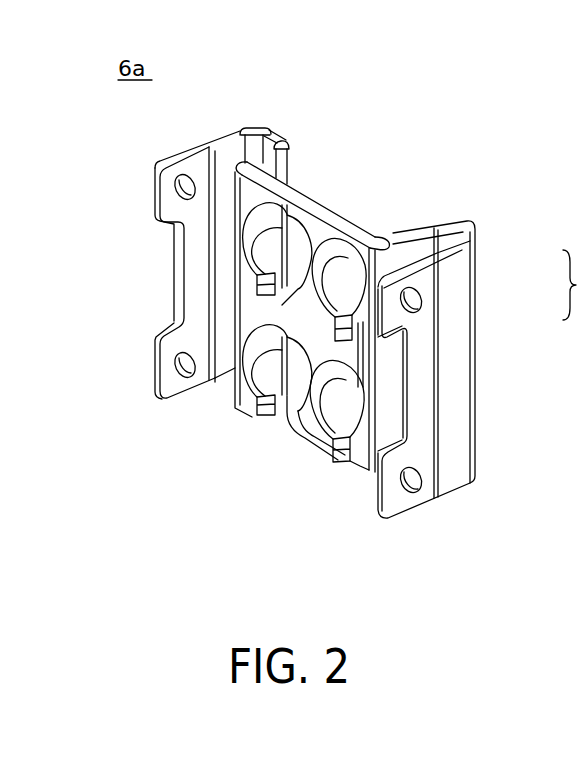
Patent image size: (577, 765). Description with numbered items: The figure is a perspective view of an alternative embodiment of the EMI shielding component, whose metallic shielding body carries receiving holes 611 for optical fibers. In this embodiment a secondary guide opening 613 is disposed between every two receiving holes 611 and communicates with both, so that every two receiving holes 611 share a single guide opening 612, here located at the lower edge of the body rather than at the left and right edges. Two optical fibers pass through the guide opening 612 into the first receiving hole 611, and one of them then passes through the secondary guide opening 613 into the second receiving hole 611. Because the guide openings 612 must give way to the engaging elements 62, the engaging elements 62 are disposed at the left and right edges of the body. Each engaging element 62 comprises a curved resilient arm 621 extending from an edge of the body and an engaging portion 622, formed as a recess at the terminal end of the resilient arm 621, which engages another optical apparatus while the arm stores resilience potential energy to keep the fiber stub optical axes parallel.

The engaging element 62 is at (197, 227).
The receiving hole 611 is at (352, 298).
The guide opening 612 is at (338, 462).
The secondary guide opening 613 is at (338, 328).
The resilient arm 621 is at (458, 224).
The engaging portion 622 is at (420, 319).